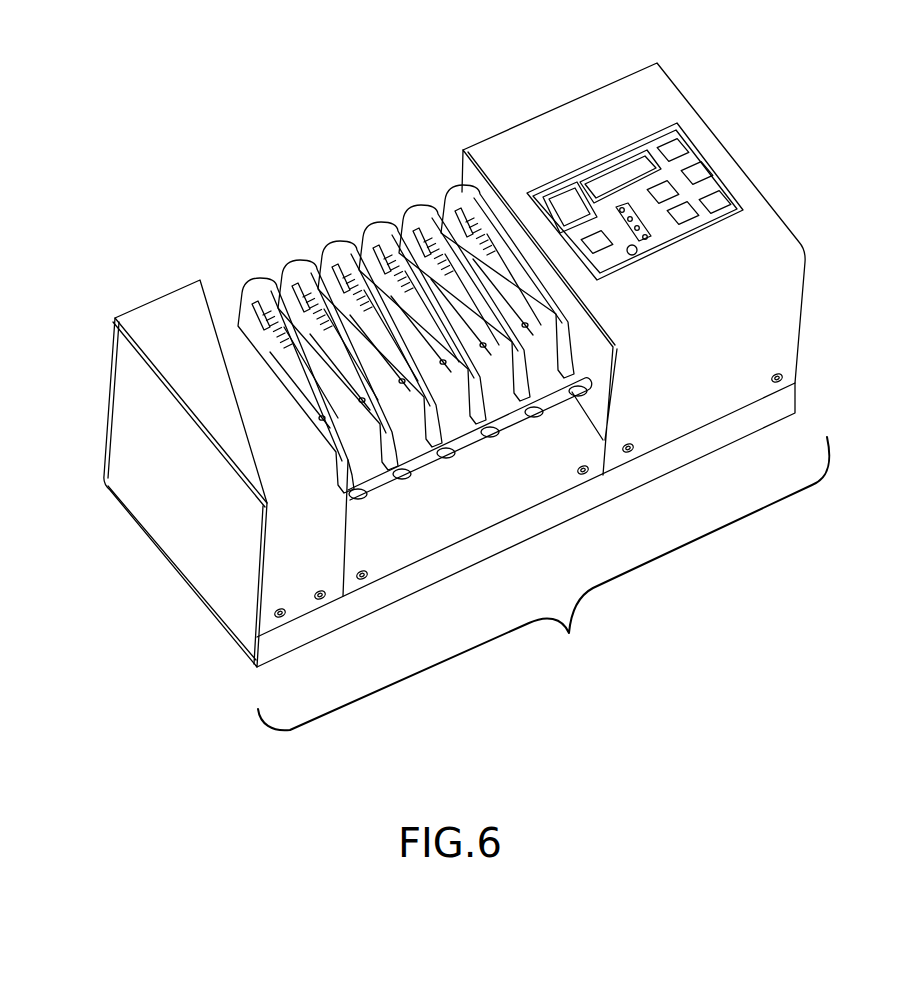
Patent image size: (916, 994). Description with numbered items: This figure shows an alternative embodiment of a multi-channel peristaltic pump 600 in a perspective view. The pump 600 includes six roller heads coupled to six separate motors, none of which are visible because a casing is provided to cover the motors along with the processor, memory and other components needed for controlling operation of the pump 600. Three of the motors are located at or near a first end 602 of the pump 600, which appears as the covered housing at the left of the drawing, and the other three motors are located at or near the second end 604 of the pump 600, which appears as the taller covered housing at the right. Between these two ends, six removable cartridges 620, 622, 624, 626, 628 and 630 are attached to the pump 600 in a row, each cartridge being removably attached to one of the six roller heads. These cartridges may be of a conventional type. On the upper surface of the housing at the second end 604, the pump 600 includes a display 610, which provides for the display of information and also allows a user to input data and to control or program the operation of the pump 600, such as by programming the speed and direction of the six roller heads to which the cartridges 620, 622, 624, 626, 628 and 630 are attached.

The peristaltic pump 600 is at (543, 583).
The first end 602 is at (153, 325).
The second end 604 is at (777, 327).
The display 610 is at (663, 233).
The removable cartridge 620 is at (258, 292).
The removable cartridge 622 is at (303, 267).
The removable cartridge 624 is at (340, 248).
The removable cartridge 626 is at (382, 233).
The removable cartridge 628 is at (417, 217).
The removable cartridge 630 is at (457, 197).